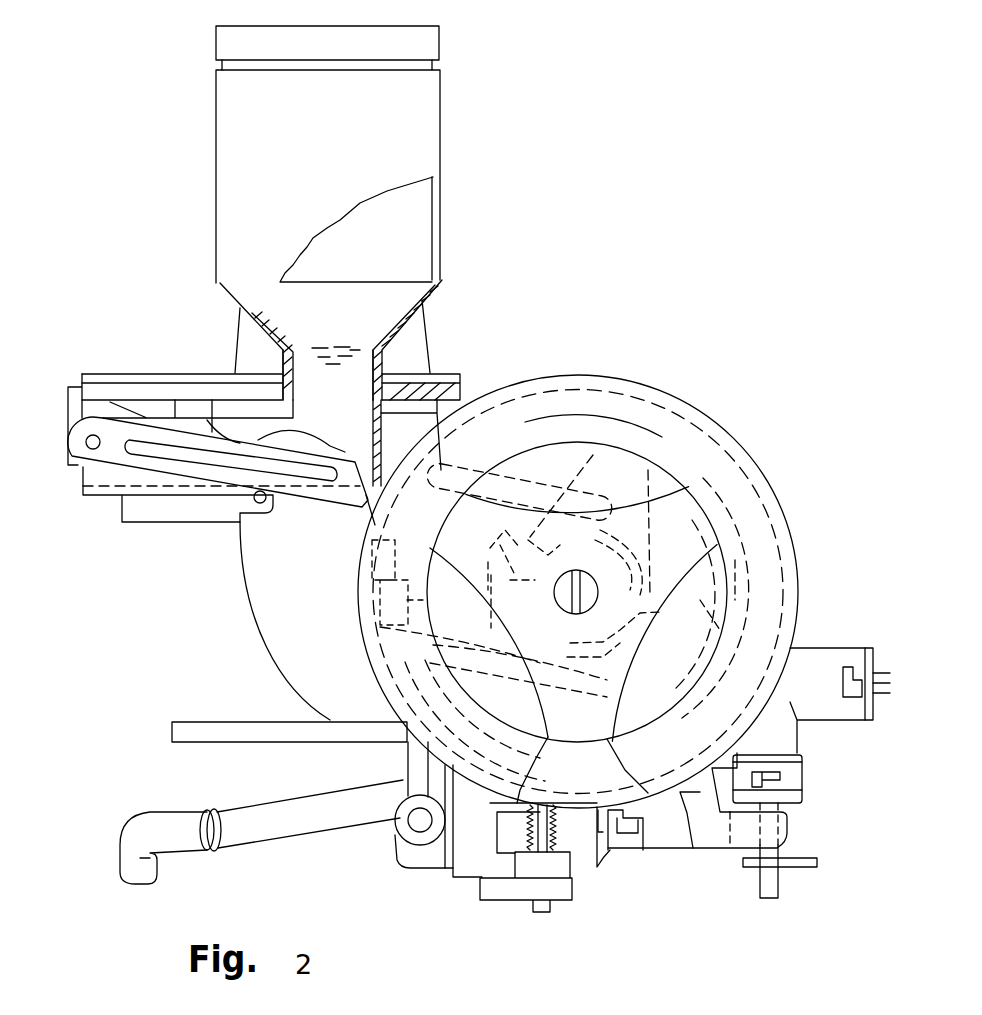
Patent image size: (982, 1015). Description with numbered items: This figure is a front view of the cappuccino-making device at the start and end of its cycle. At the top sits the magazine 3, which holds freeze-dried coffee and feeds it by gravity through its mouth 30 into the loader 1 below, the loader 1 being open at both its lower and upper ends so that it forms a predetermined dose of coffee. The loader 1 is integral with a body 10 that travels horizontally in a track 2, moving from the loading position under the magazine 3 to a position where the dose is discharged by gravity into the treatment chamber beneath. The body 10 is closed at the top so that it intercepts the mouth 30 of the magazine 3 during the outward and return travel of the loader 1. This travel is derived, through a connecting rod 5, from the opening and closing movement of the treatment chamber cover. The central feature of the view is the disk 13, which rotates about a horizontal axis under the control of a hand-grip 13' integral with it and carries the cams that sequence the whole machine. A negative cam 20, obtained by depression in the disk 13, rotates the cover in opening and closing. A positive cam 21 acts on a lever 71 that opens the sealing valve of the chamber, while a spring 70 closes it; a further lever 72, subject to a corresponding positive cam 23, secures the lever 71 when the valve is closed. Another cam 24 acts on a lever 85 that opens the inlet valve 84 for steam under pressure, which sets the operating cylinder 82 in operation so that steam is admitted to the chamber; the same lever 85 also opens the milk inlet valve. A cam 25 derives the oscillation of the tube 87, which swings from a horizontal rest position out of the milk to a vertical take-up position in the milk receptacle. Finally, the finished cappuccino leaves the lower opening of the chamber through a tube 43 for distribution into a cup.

The loader 1 is at (400, 377).
The track 2 is at (113, 387).
The magazine 3 is at (410, 235).
The connecting rod 5 is at (150, 430).
The body 10 is at (70, 387).
The disk 13 is at (578, 591).
The hand-grip 13' is at (582, 819).
The negative cam 20 is at (530, 485).
The positive cam 21 is at (527, 552).
The positive cam 23 is at (600, 557).
The cam 24 is at (733, 573).
The cam 25 is at (712, 618).
The mouth 30 is at (382, 352).
The tube 43 is at (258, 830).
The spring 70 is at (523, 843).
The lever 71 is at (491, 610).
The further lever 72 is at (572, 643).
The operating cylinder 82 is at (823, 712).
The inlet valve 84 is at (785, 888).
The lever 85 is at (713, 843).
The oscillating tube 87 is at (203, 723).